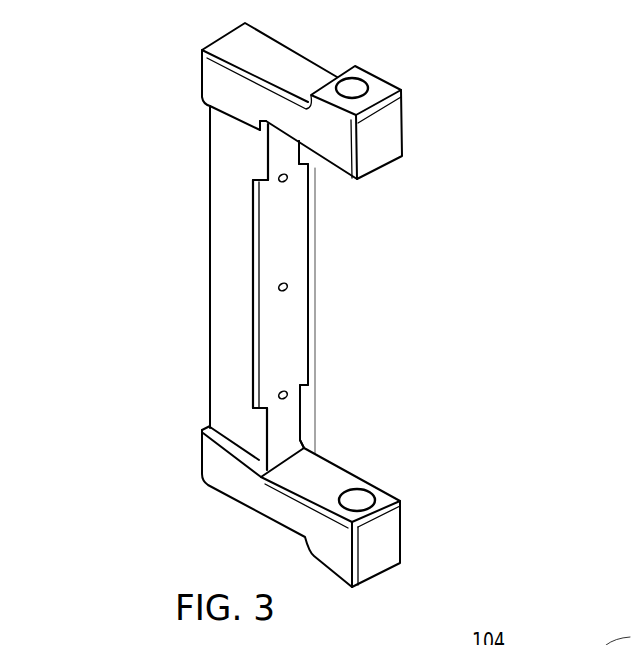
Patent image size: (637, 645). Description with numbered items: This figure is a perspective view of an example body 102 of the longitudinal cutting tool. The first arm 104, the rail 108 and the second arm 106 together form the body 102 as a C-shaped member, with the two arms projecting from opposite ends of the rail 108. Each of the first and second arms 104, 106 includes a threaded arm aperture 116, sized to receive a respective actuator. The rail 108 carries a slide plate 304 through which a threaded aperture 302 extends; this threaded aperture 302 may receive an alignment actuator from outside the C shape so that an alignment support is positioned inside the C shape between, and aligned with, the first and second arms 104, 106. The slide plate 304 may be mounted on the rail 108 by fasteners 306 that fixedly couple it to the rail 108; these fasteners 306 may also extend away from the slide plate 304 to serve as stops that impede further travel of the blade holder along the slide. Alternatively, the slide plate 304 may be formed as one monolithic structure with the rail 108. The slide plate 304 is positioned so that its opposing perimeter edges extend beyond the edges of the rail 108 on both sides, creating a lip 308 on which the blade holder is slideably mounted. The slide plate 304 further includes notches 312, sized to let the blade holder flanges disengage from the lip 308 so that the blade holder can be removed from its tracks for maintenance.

The body 102 is at (132, 43).
The first arm 104 is at (378, 138).
The second arm 106 is at (383, 543).
The rail 108 is at (222, 255).
The threaded arm apertures 116 is at (368, 76).
The threaded aperture 302 is at (287, 291).
The slide plate 304 is at (302, 248).
The fasteners 306 is at (280, 173).
The lip 308 is at (256, 189).
The notches 312 is at (250, 157).